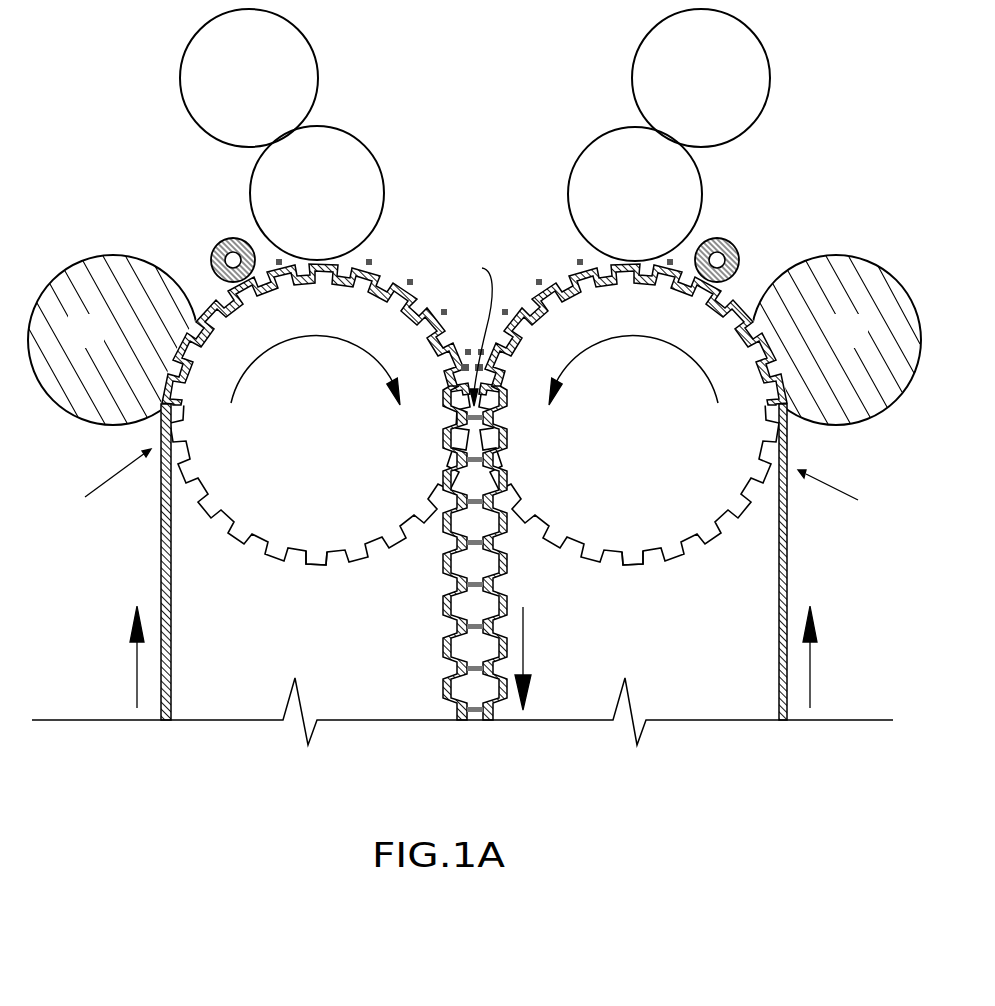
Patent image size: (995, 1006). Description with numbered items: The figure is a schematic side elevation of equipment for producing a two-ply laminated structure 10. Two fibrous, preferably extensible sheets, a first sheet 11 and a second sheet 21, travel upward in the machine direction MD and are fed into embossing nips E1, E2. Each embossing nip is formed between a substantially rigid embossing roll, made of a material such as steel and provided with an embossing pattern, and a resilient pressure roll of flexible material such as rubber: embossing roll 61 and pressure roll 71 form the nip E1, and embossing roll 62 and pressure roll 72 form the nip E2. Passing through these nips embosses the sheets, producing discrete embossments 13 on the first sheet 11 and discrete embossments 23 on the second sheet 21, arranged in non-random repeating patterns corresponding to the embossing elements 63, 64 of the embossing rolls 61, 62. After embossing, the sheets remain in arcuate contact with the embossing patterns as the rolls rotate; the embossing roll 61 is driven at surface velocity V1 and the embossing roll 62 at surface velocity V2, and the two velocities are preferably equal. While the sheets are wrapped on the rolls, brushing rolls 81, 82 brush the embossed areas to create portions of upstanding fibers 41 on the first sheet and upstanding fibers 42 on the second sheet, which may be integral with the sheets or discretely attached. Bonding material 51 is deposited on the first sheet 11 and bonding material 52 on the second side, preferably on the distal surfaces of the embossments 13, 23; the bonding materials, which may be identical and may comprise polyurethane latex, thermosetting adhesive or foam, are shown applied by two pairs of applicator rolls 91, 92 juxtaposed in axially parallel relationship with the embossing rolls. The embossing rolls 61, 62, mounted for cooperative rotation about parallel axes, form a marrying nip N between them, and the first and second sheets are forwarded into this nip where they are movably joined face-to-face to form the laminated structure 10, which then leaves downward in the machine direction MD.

The laminated structure 10 is at (448, 652).
The first sheet 11 is at (172, 645).
The embossments 13 is at (402, 272).
The second sheet 21 is at (779, 655).
The embossments 23 is at (733, 286).
The upstanding fibers 41 is at (262, 262).
The upstanding fibers 42 is at (688, 262).
The bonding material 51 is at (374, 260).
The bonding material 52 is at (586, 265).
The embossing roll 61 is at (412, 457).
The embossing roll 62 is at (572, 457).
The embossing elements 63 is at (316, 553).
The embossing elements 64 is at (636, 553).
The pressure roll 71 is at (100, 345).
The pressure roll 72 is at (864, 345).
The brushing roll 81 is at (219, 244).
The brushing roll 82 is at (722, 238).
The applicator rolls 91 is at (322, 205).
The applicator rolls 92 is at (648, 205).
The marrying nip N is at (478, 332).
The surface velocity V1 is at (315, 370).
The surface velocity V2 is at (633, 370).
The embossing nip E1 is at (94, 481).
The embossing nip E2 is at (847, 493).
The machine direction MD is at (474, 656).